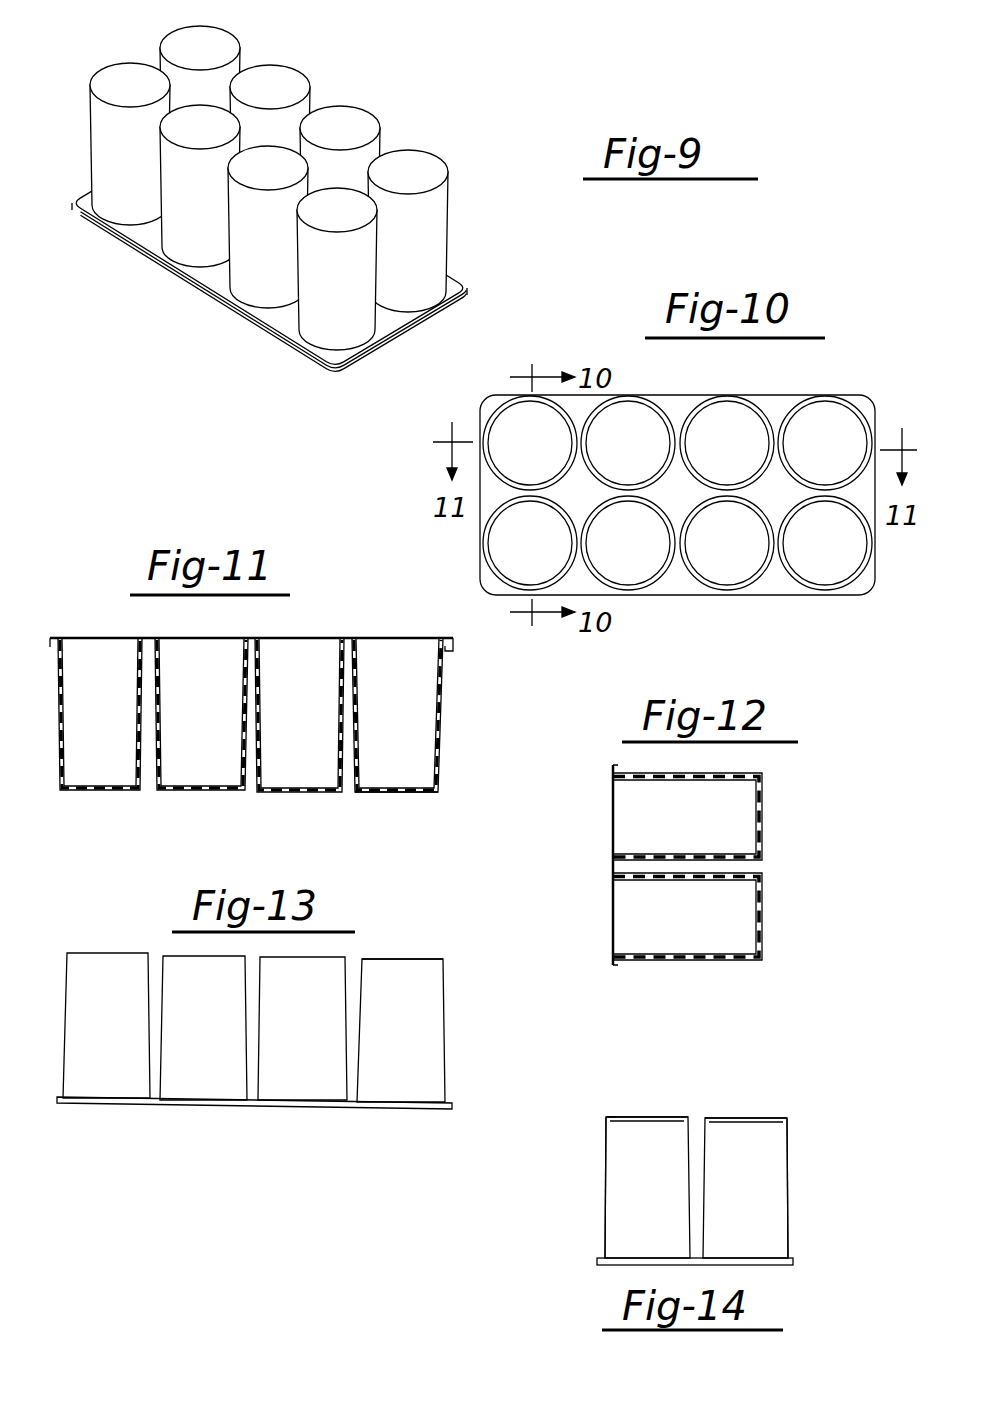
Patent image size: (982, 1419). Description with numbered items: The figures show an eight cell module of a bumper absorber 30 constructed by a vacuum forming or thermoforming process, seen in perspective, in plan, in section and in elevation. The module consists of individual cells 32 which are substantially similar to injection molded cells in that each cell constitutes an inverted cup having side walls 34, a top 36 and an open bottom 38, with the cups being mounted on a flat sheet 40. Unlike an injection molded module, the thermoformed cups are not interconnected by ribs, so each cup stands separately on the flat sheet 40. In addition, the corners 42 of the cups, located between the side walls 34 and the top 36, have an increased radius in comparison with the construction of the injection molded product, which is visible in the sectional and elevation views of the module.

In FIG. 9, the bumper absorber 30 is at (350, 92).
In FIG. 10, the bumper absorber 30 is at (698, 508).
In FIG. 11, the bumper absorber 30 is at (112, 605).
In FIG. 12, the bumper absorber 30 is at (790, 805).
In FIG. 13, the bumper absorber 30 is at (130, 925).
In FIG. 14, the bumper absorber 30 is at (625, 1055).
In FIG. 9, the cells 32 is at (232, 47).
In FIG. 10, the cells 32 is at (748, 408).
In FIG. 11, the cells 32 is at (440, 742).
In FIG. 13, the cells 32 is at (477, 970).
In FIG. 14, the cells 32 is at (810, 1228).
In FIG. 9, the side walls 34 is at (423, 255).
In FIG. 11, the side walls 34 is at (440, 713).
In FIG. 14, the side walls 34 is at (605, 1190).
In FIG. 9, the top 36 is at (403, 168).
In FIG. 10, the top 36 is at (837, 553).
In FIG. 11, the top 36 is at (390, 795).
In FIG. 12, the top 36 is at (762, 913).
In FIG. 13, the top 36 is at (398, 958).
In FIG. 14, the top 36 is at (648, 1117).
In FIG. 9, the open bottom 38 is at (420, 350).
In FIG. 11, the open bottom 38 is at (312, 632).
In FIG. 13, the open bottom 38 is at (305, 1118).
In FIG. 9, the flat sheet 40 is at (460, 290).
In FIG. 10, the flat sheet 40 is at (773, 585).
In FIG. 13, the flat sheet 40 is at (457, 1087).
In FIG. 14, the flat sheet 40 is at (793, 1262).
In FIG. 14, the corners 42 is at (606, 1117).